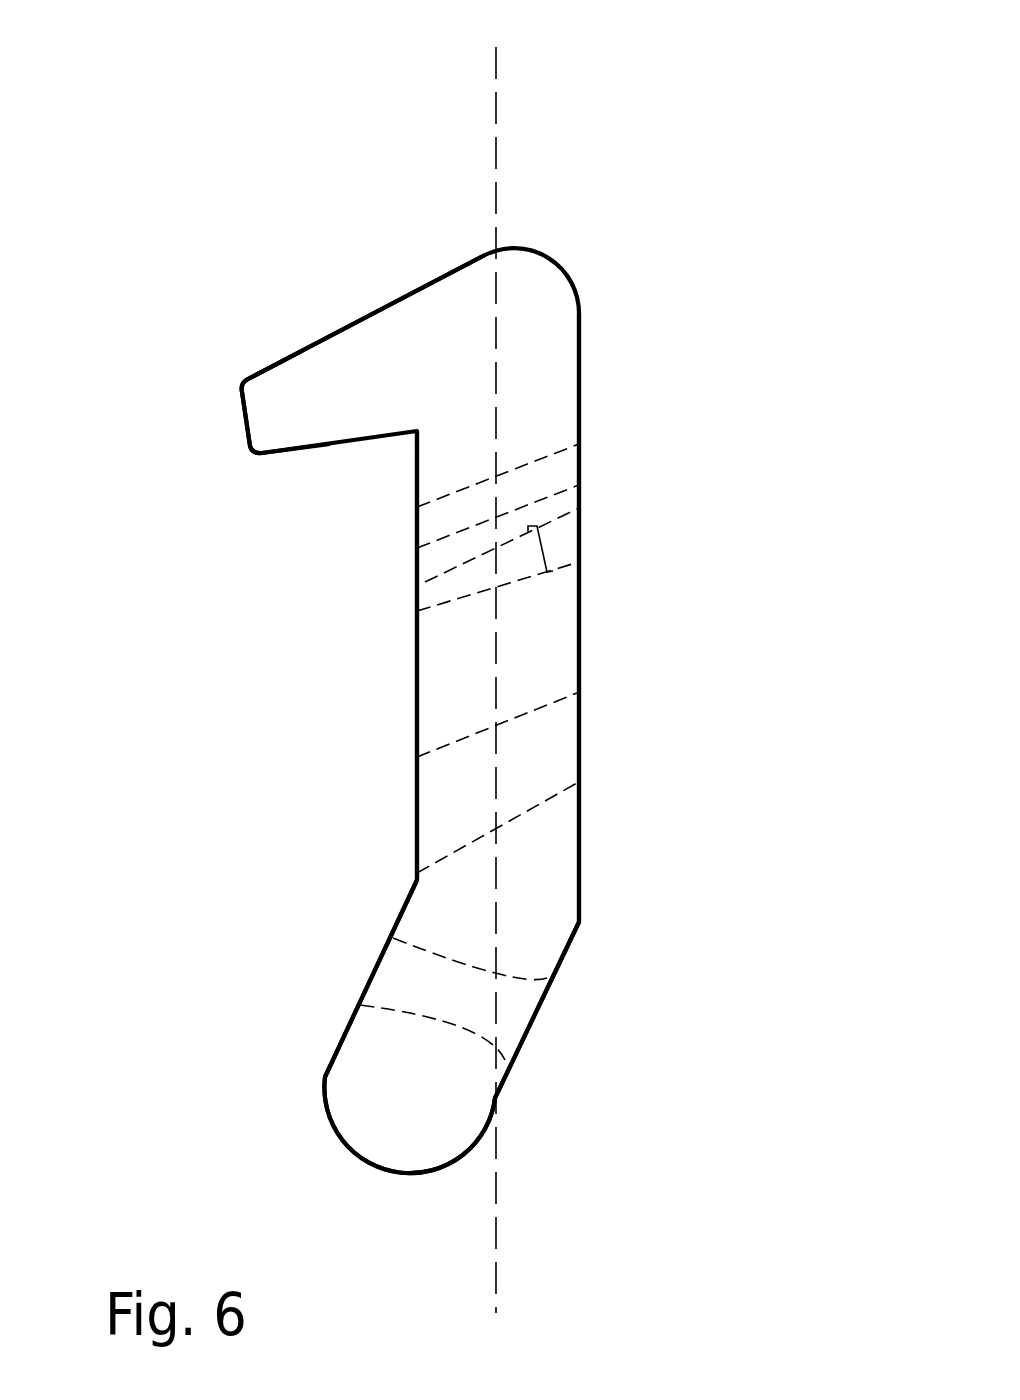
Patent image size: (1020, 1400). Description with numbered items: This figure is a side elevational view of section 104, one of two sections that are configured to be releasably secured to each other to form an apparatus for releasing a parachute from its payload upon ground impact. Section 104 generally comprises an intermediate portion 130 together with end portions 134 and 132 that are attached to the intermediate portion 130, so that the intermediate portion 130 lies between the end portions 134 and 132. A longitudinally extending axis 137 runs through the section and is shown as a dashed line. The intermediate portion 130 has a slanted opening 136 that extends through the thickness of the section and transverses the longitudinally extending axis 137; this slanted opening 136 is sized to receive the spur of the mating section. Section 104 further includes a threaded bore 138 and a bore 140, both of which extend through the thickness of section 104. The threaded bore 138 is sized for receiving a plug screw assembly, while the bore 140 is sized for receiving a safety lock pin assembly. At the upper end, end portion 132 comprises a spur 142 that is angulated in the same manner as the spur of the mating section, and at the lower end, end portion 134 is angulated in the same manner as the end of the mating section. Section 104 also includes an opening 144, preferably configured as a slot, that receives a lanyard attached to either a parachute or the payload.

The section 104 is at (319, 112).
The intermediate portion 130 is at (733, 412).
The end portion 132 is at (392, 302).
The end portion 134 is at (493, 1113).
The slanted opening 136 is at (552, 773).
The longitudinally extending axis 137 is at (497, 113).
The threaded bore 138 is at (558, 477).
The bore 140 is at (567, 542).
The spur 142 is at (291, 352).
The opening 144 is at (533, 1023).